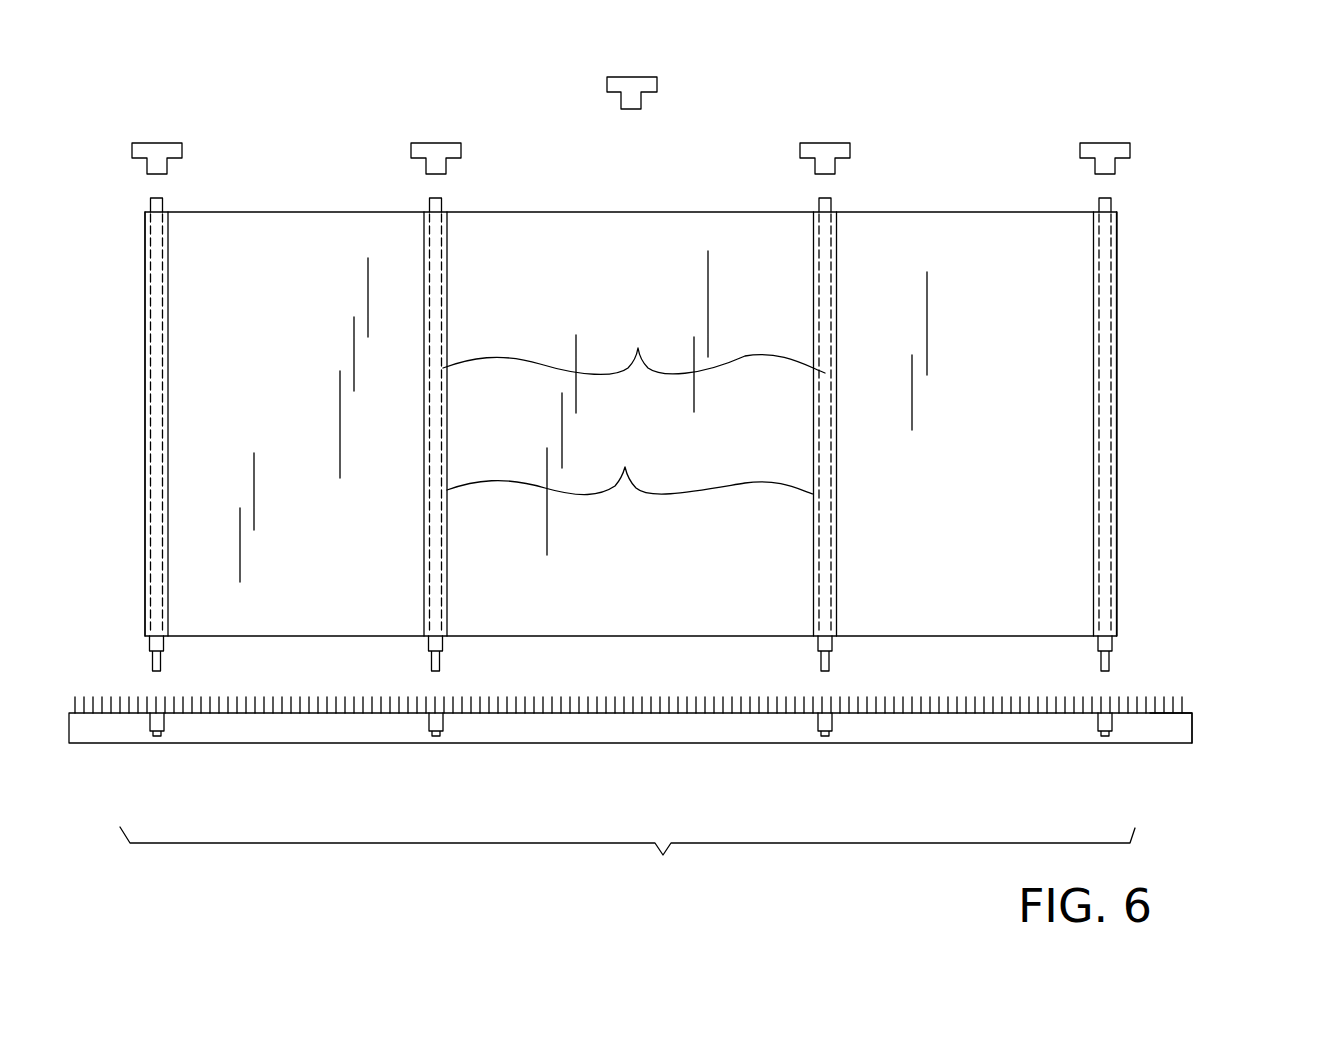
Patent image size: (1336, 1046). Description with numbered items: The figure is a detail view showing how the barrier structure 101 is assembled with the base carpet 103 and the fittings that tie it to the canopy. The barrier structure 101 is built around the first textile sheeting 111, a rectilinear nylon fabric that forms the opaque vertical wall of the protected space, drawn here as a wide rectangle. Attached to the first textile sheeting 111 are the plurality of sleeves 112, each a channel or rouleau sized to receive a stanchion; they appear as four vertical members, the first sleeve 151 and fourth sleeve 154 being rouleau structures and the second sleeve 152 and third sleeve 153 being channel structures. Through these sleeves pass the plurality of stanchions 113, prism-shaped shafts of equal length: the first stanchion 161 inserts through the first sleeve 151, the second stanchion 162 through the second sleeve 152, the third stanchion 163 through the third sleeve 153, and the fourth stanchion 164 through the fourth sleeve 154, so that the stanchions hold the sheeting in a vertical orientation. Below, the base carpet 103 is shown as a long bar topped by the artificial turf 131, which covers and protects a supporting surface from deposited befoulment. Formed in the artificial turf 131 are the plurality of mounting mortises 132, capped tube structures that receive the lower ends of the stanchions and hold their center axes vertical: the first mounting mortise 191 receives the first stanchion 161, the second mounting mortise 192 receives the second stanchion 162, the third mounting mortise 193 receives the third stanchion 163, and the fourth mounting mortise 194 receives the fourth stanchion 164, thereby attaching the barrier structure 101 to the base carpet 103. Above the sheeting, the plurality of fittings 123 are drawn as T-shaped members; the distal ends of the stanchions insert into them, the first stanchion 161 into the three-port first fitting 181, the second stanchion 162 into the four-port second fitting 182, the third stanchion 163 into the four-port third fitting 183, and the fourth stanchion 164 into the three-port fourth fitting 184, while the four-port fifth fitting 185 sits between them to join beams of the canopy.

The barrier structure 101 is at (689, 407).
The base carpet 103 is at (701, 754).
The first textile sheeting 111 is at (670, 222).
The plurality of sleeves 112 is at (576, 468).
The plurality of stanchions 113 is at (640, 332).
The plurality of fittings 123 is at (712, 89).
The artificial turf 131 is at (1183, 725).
The plurality of mounting mortises 132 is at (627, 861).
The first sleeve 151 is at (170, 358).
The second sleeve 152 is at (425, 484).
The third sleeve 153 is at (838, 250).
The fourth sleeve 154 is at (1093, 375).
The first stanchion 161 is at (158, 300).
The second stanchion 162 is at (436, 552).
The third stanchion 163 is at (825, 313).
The fourth stanchion 164 is at (1103, 449).
The first fitting 181 is at (152, 143).
The second fitting 182 is at (434, 143).
The third fitting 183 is at (826, 143).
The fourth fitting 184 is at (1101, 143).
The fifth fitting 185 is at (628, 77).
The first mounting mortise 191 is at (157, 737).
The second mounting mortise 192 is at (437, 737).
The third mounting mortise 193 is at (826, 737).
The fourth mounting mortise 194 is at (1104, 737).